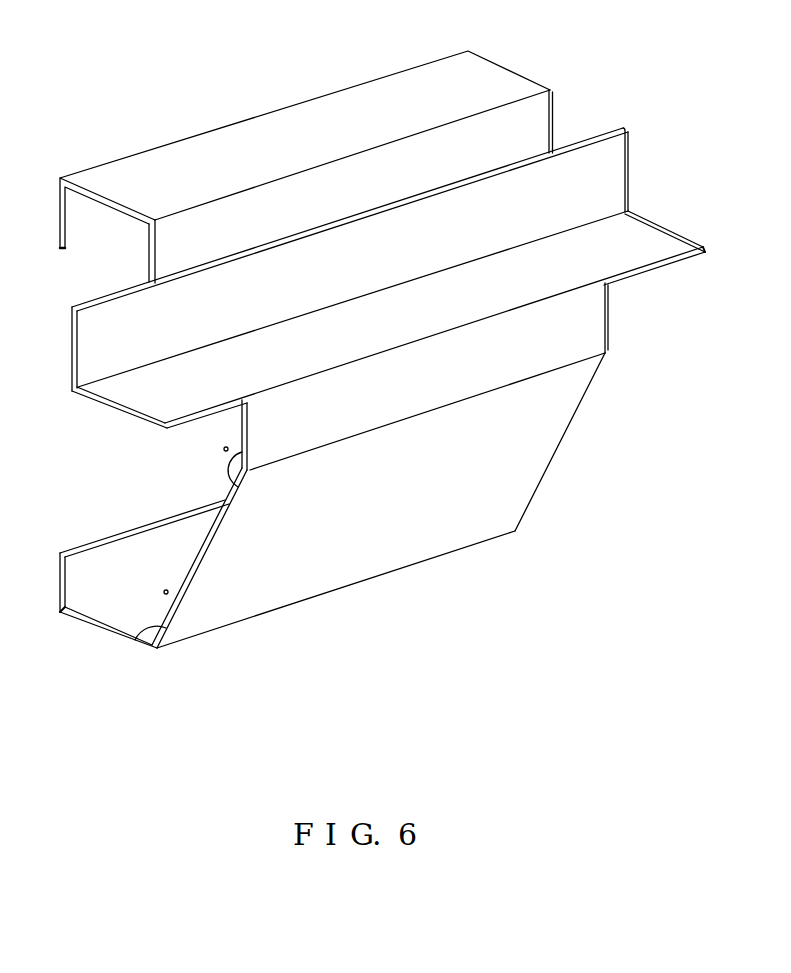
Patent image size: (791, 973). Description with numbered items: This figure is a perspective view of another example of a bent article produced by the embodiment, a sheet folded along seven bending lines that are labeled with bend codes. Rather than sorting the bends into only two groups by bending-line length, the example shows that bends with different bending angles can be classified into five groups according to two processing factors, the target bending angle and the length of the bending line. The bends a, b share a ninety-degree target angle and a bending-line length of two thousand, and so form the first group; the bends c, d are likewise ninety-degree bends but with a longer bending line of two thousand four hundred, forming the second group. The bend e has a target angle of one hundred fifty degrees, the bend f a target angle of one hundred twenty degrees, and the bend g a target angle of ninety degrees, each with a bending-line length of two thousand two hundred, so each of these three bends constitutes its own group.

The bend a is at (257, 117).
The bend b is at (338, 158).
The bend c is at (390, 287).
The bend d is at (443, 334).
The bend e is at (468, 397).
The bend f is at (402, 567).
The bend g is at (108, 598).